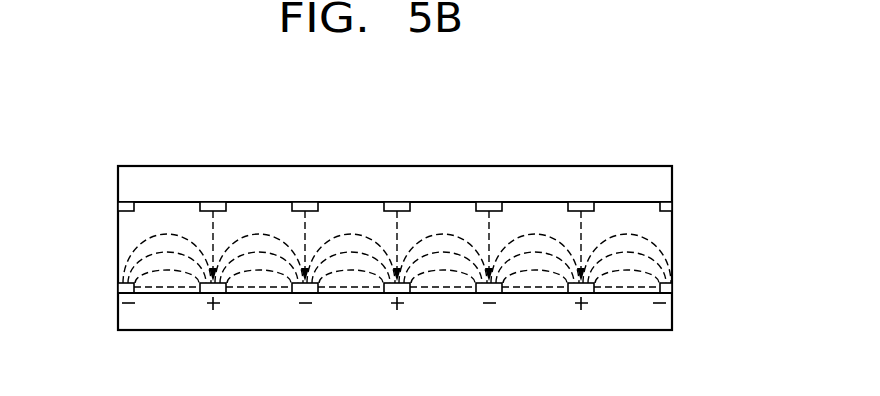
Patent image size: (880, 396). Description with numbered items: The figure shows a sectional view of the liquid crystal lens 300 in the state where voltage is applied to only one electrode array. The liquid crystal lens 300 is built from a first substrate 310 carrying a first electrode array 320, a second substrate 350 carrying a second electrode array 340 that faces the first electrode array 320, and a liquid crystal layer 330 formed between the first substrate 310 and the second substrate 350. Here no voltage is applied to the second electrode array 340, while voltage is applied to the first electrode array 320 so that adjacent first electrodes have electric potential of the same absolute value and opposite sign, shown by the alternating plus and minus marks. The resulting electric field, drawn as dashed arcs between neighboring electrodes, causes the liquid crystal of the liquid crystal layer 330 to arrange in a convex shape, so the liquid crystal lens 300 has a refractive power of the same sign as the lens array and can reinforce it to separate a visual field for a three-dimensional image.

The liquid crystal lens 300 is at (95, 168).
The first substrate 310 is at (667, 312).
The first electrode array 320 is at (682, 292).
The liquid crystal layer 330 is at (667, 239).
The second electrode array 340 is at (685, 210).
The second substrate 350 is at (667, 178).